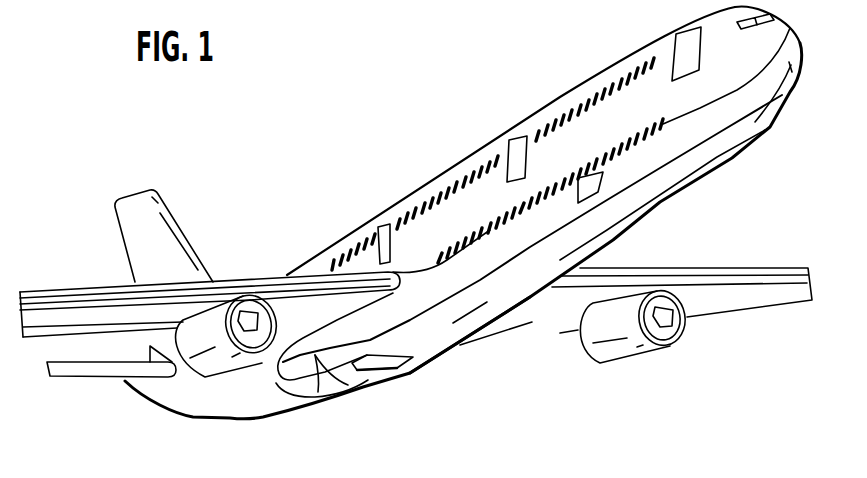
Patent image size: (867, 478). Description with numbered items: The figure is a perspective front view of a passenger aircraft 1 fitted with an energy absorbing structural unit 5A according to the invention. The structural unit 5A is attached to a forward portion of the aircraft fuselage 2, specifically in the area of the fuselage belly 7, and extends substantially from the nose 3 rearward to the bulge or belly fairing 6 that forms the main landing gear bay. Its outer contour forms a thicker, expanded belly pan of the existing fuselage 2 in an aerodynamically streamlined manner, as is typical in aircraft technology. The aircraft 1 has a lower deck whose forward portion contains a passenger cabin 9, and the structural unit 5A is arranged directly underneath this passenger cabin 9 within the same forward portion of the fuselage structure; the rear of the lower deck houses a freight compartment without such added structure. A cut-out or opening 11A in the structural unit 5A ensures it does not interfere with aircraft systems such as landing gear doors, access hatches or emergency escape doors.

The passenger aircraft 1 is at (533, 90).
The aircraft fuselage 2 is at (460, 230).
The nose 3 is at (796, 81).
The energy absorbing structural unit 5A is at (450, 334).
The belly fairing 6 is at (320, 406).
The fuselage belly 7 is at (715, 141).
The passenger cabin 9 is at (493, 214).
The opening 11A is at (397, 368).